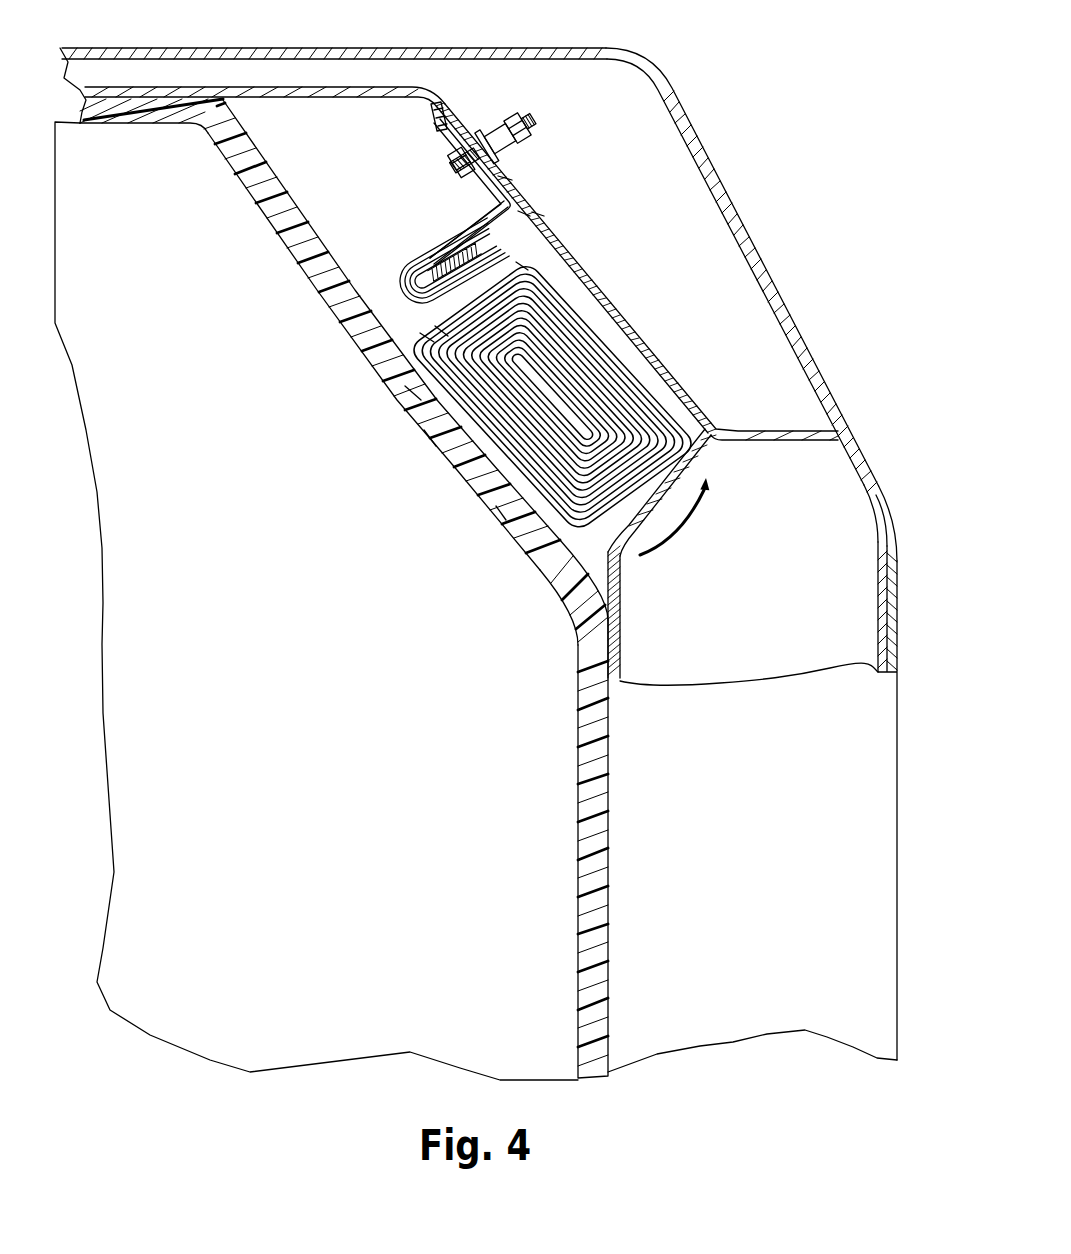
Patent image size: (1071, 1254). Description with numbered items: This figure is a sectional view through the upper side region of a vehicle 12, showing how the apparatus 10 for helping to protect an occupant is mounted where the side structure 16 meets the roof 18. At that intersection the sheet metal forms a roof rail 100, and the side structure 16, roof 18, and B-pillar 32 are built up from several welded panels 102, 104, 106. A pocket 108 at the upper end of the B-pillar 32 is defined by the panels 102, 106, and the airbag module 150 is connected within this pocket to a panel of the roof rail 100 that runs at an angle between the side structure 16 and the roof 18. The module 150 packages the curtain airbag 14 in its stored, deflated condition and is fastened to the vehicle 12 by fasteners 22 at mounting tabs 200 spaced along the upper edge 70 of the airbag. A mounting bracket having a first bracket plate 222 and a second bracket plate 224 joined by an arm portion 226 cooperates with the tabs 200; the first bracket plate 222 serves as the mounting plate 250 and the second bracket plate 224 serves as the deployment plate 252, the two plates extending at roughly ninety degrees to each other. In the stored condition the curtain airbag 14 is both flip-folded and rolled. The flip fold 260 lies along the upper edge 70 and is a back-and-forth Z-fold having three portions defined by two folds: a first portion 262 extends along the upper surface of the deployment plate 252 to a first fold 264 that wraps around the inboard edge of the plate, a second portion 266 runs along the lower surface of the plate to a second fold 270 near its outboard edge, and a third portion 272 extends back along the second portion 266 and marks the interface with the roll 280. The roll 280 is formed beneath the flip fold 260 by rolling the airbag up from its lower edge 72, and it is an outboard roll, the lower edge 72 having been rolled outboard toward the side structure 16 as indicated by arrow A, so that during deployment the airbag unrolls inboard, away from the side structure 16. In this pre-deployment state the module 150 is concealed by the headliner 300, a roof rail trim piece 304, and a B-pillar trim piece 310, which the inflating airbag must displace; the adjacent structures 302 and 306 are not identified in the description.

The apparatus 10 is at (614, 191).
The vehicle 12 is at (381, 130).
The curtain airbag 14 is at (430, 439).
The side structure 16 is at (904, 506).
The roof 18 is at (76, 86).
The fasteners 22 is at (462, 170).
The B pillar 32 is at (902, 657).
The upper edge 70 is at (505, 178).
The lower edge 72 is at (500, 514).
The roof rail 100 is at (824, 363).
The panel 102 is at (640, 339).
The panel 104 is at (893, 587).
The panel 106 is at (614, 620).
The pocket 108 is at (598, 380).
The airbag module 150 is at (408, 398).
The mounting tabs 200 is at (448, 100).
The first bracket plate 222 is at (505, 122).
The second bracket plate 224 is at (462, 240).
The arm portion 226 is at (525, 213).
The mounting plate 250 is at (532, 134).
The deployment plate 252 is at (424, 270).
The flip fold 260 is at (398, 294).
The first portion 262 is at (475, 210).
The first fold 264 is at (427, 339).
The second portion 266 is at (440, 331).
The second fold 270 is at (538, 214).
The third portion 272 is at (522, 267).
The roll 280 is at (705, 455).
The headliner 300 is at (106, 112).
The top panel 302 is at (277, 106).
The roof rail trim piece 304 is at (450, 462).
The bend 306 is at (560, 575).
The B-pillar trim piece 310 is at (576, 720).
The arrow A is at (690, 528).